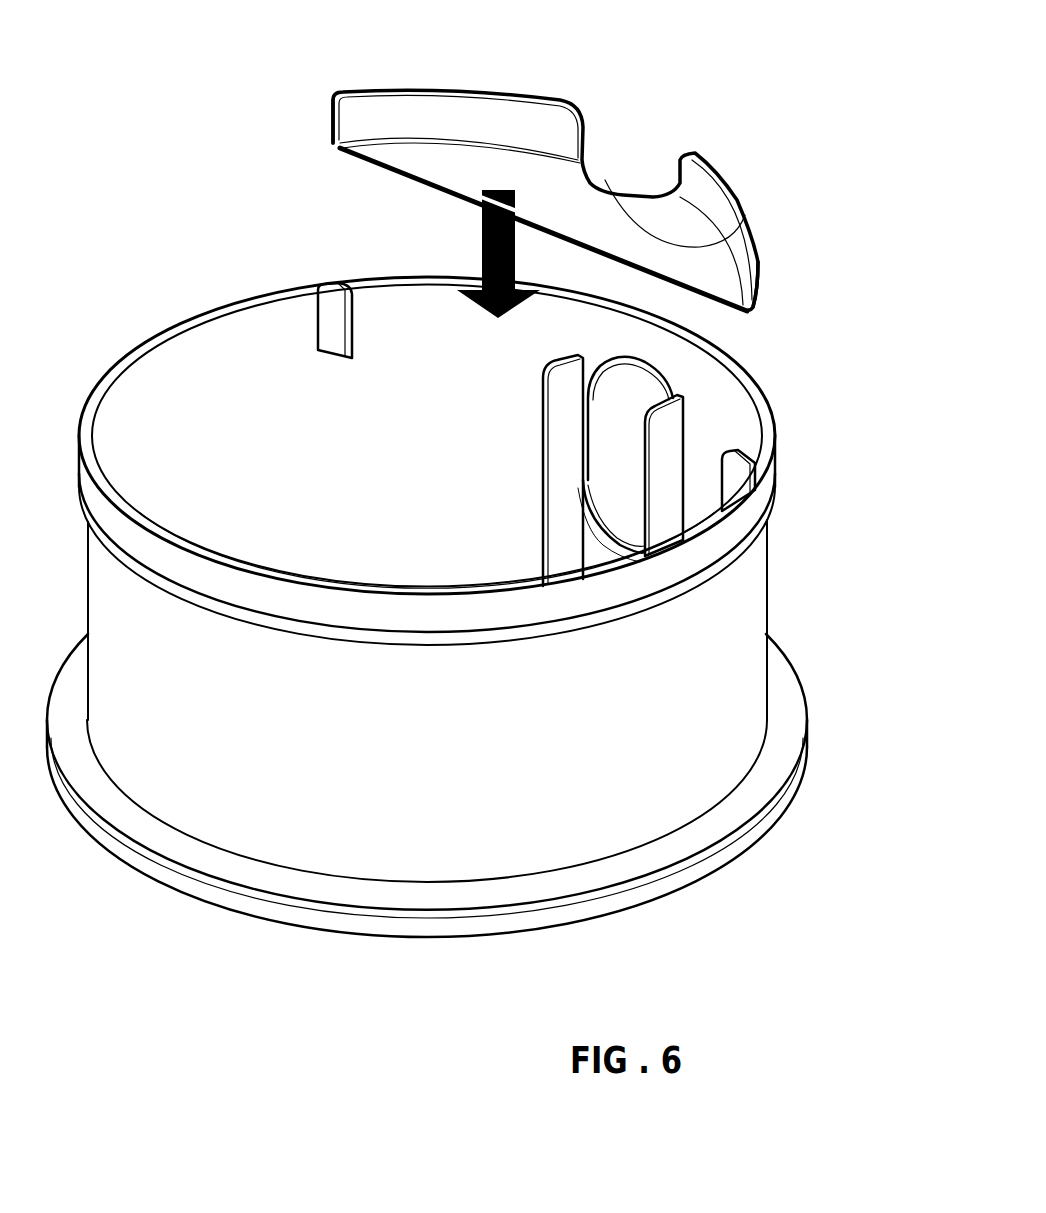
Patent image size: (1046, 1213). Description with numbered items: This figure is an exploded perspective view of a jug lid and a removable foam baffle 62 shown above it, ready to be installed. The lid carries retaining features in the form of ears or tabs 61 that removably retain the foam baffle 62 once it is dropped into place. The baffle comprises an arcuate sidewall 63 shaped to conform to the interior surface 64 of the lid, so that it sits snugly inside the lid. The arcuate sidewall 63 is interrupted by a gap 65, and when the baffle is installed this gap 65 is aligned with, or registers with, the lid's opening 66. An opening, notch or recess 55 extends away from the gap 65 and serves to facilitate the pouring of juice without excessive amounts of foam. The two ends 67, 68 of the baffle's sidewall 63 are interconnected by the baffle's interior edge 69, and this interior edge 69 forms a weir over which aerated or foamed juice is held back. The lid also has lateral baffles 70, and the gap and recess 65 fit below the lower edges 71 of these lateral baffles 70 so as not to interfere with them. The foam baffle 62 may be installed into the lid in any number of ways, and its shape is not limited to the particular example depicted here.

The opening, notch or recess 55 is at (717, 240).
The ears or tabs 61 is at (327, 328).
The foam baffle 62 is at (503, 107).
The sidewall 63 is at (727, 207).
The interior surface 64 is at (198, 393).
The gap 65 is at (637, 148).
The lid's opening 66 is at (637, 398).
The end of the baffle's sidewall 67 is at (342, 112).
The end of the baffle's sidewall 68 is at (757, 280).
The interior edge 69 is at (375, 170).
The lateral baffles 70 is at (660, 470).
The lower edges 71 is at (563, 353).